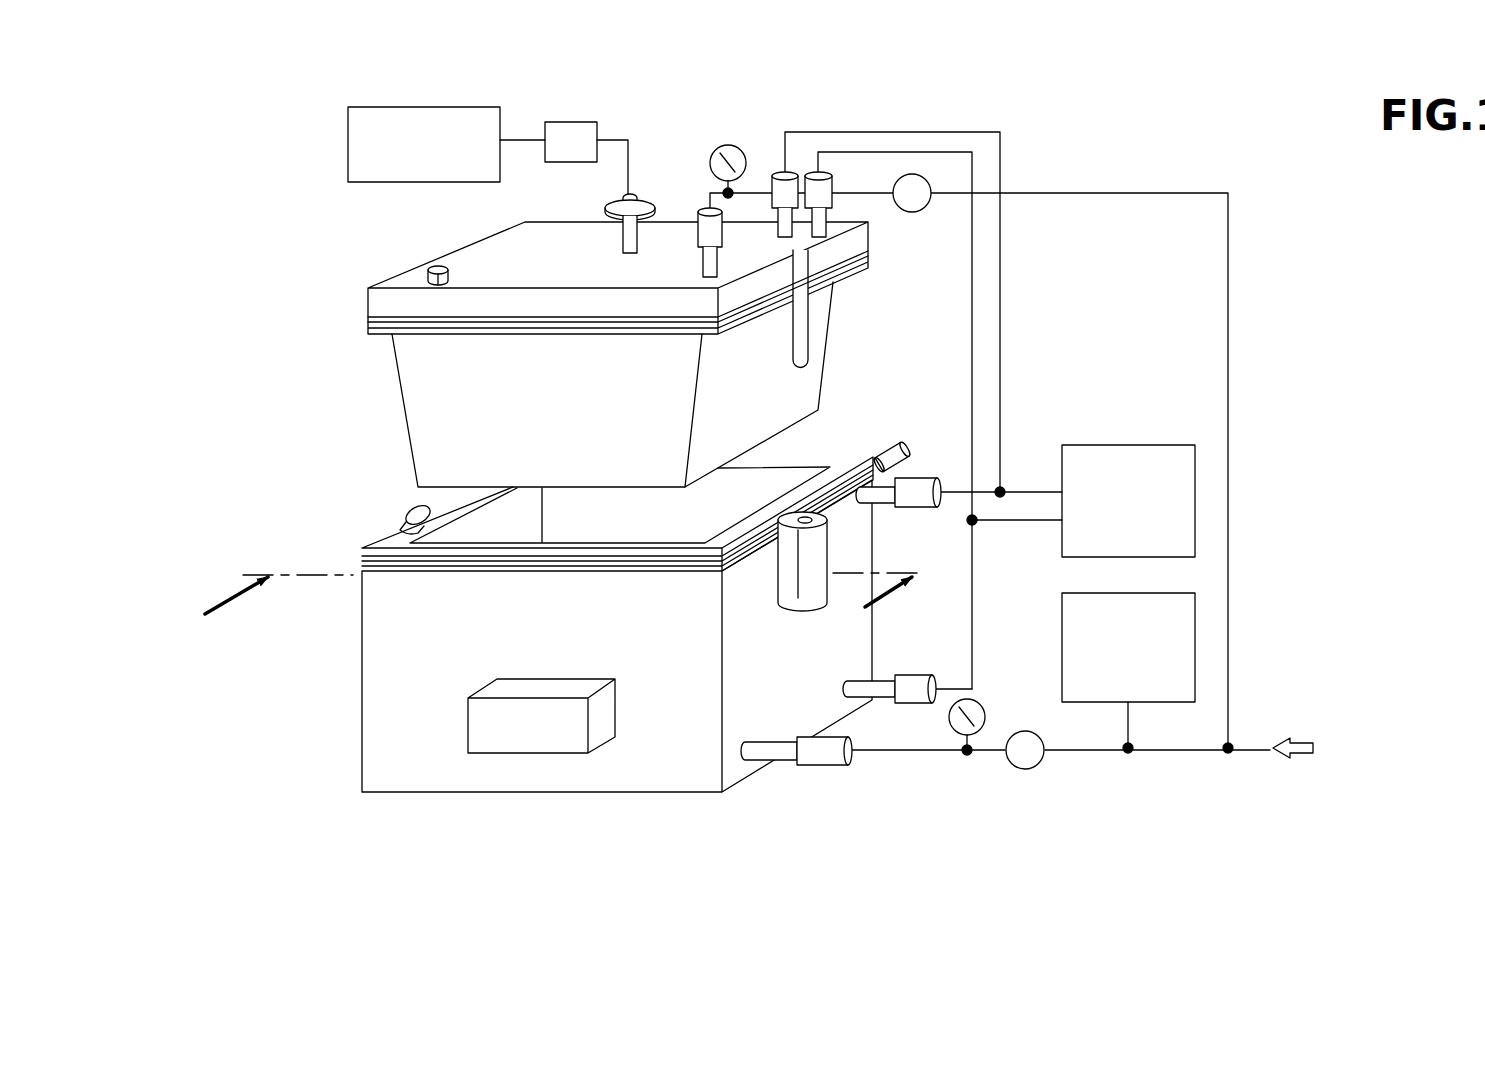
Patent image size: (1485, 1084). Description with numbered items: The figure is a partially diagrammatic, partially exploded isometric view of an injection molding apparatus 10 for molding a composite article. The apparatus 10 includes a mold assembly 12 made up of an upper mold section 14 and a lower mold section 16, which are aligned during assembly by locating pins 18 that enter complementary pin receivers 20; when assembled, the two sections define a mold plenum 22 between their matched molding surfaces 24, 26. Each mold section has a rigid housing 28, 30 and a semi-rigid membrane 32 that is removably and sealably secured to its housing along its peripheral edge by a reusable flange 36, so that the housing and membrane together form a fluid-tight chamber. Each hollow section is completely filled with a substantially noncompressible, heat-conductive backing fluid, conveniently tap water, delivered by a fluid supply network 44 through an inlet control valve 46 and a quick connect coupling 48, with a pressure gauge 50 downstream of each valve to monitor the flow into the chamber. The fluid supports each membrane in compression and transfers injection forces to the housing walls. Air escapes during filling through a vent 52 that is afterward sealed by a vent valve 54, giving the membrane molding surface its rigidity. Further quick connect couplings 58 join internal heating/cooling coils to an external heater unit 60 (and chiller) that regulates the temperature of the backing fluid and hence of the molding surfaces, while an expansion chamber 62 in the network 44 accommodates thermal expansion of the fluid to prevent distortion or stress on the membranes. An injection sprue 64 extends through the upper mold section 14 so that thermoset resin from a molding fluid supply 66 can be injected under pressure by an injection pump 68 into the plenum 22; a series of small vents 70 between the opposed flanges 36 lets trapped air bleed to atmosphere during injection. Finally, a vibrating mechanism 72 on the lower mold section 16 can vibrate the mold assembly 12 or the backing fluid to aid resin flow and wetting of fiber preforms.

The apparatus 10 is at (1138, 148).
The mold assembly 12 is at (302, 464).
The upper mold section 14 is at (340, 273).
The lower mold section 16 is at (344, 760).
The locating pins 18 is at (803, 343).
The pin receivers 20 is at (412, 510).
The mold plenum 22 is at (757, 490).
The molding surface 24 is at (793, 409).
The molding surface 26 is at (457, 537).
The rigid housing 28 is at (362, 318).
The rigid housing 30 is at (358, 677).
The semi-rigid membrane 32 is at (397, 380).
The flange 36 is at (870, 253).
The fluid supply network 44 is at (1245, 697).
The inlet control valve 46 is at (915, 211).
The quick connect coupling 48 is at (722, 232).
The pressure gauge 50 is at (727, 147).
The vent 52 is at (428, 270).
The vent valve 54 is at (440, 262).
The quick connect coupling 58 is at (842, 170).
The heater unit 60 is at (1200, 483).
The expansion chamber 62 is at (1196, 622).
The injection sprue 64 is at (605, 208).
The molding fluid supply 66 is at (353, 170).
The injection pump 68 is at (565, 122).
The small vents 70 is at (395, 548).
The vibrating mechanism 72 is at (517, 753).